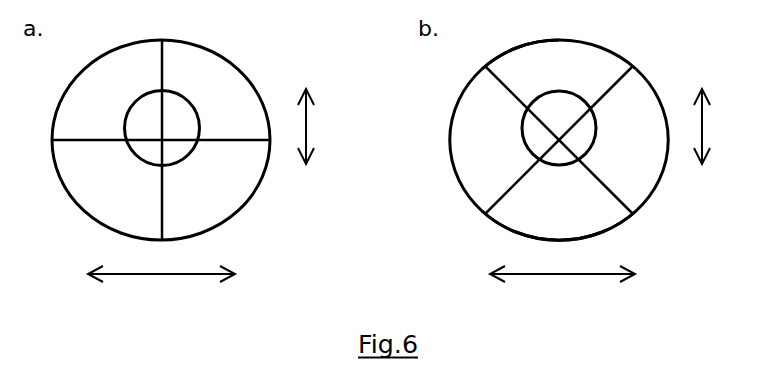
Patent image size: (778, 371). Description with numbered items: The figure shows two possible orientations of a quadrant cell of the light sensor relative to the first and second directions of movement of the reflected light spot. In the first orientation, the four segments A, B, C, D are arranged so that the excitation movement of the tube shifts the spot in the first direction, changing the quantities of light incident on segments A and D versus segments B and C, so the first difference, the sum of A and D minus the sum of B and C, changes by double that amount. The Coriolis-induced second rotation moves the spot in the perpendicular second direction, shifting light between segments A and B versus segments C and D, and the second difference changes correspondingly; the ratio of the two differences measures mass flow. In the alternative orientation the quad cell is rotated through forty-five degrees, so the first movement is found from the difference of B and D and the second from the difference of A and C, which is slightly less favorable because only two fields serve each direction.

The segment A is at (305, 79).
The segment B is at (424, 125).
The segment C is at (398, 201).
The segment D is at (267, 154).